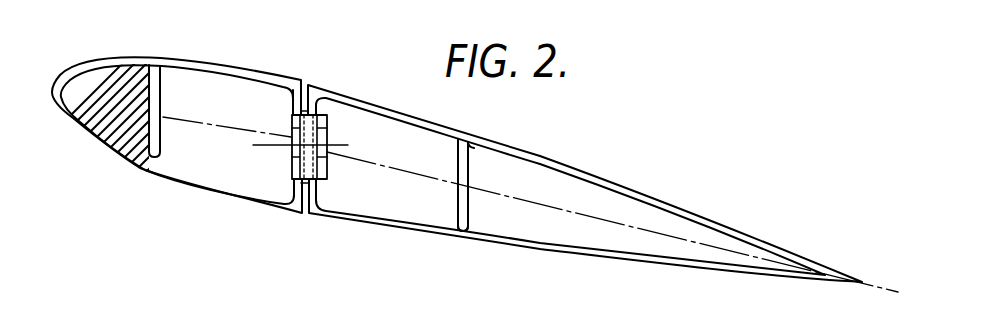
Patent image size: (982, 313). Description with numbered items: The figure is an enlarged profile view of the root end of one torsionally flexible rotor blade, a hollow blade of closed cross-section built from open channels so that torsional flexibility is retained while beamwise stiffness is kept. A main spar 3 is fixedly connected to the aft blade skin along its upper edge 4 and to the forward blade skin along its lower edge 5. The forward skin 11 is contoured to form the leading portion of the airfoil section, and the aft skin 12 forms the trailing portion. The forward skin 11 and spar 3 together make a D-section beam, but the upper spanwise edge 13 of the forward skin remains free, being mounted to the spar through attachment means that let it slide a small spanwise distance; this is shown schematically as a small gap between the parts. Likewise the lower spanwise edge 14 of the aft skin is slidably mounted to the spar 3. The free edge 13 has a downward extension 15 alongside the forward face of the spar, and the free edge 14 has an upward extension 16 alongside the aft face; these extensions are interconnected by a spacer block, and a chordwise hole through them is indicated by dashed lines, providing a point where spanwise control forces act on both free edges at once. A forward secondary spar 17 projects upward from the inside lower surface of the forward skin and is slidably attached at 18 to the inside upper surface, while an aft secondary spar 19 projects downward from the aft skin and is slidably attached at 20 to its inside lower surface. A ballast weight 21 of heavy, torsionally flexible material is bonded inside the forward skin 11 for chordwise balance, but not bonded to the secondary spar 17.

The forward skin 11 is at (114, 56).
The aft skin 12 is at (672, 198).
The upper spanwise edge of the forward skin 13 is at (297, 87).
The upper edge of main spar 4 is at (309, 98).
The main spar 3 is at (308, 128).
The downward extension 15 is at (291, 166).
The upward extension 16 is at (327, 172).
The lower edge of main spar 5 is at (307, 200).
The lower spanwise edge of the aft skin 14 is at (320, 210).
The forward secondary spar 17 is at (162, 88).
The slidable attachment of forward secondary spar 18 is at (153, 62).
The aft secondary spar 19 is at (470, 167).
The slidable attachment of aft secondary spar 20 is at (460, 231).
The ballast weight 21 is at (110, 136).